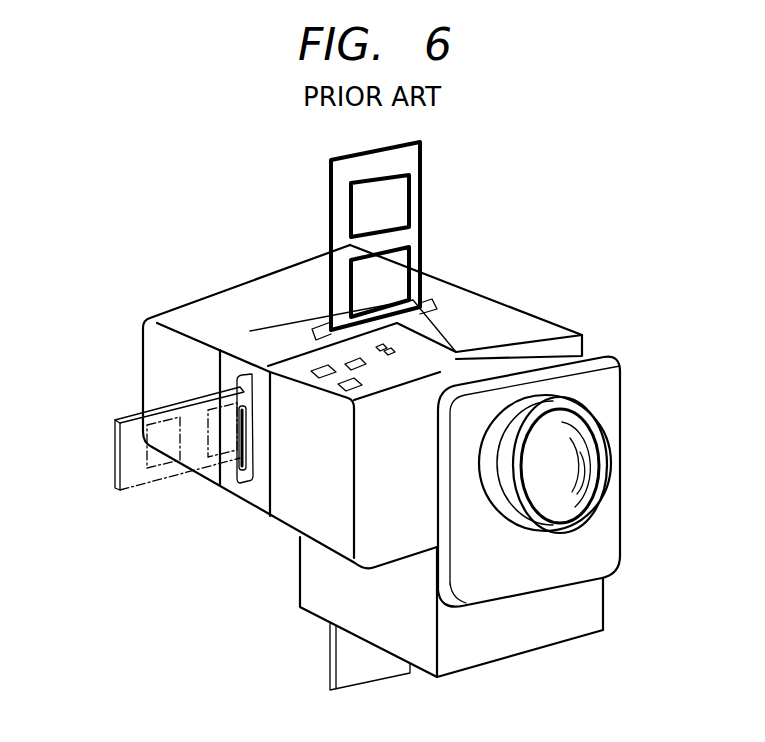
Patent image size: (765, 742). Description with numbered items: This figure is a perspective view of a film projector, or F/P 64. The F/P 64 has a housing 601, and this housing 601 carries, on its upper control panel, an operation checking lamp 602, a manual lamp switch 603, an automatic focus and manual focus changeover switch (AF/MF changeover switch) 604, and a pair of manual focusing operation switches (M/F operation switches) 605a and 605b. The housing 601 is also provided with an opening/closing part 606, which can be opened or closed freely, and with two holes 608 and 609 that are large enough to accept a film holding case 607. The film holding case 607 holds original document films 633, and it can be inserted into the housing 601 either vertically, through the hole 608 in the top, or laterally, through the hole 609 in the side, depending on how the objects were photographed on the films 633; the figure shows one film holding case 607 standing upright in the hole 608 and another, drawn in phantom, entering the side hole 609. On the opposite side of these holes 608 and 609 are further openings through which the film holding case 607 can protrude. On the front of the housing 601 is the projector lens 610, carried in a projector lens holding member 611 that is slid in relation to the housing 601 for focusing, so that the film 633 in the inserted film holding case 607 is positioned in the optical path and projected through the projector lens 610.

The film projector (F/P) 64 is at (368, 412).
The housing 601 is at (297, 510).
The operation checking lamp 602 is at (395, 346).
The manual lamp switch 603 is at (388, 358).
The automatic focus and manual focus changeover switch (AF/MF changeover switch) 604 is at (362, 370).
The manual focusing operation switch (M/F operation switch) 605a is at (318, 381).
The manual focusing operation switch (M/F operation switch) 605b is at (346, 393).
The opening/closing part 606 is at (457, 287).
The film holding case 607 is at (406, 157).
The hole 608 is at (327, 323).
The hole 609 is at (241, 480).
The projector lens 610 is at (548, 476).
The projector lens holding member 611 is at (587, 431).
The original document film 633 is at (362, 207).